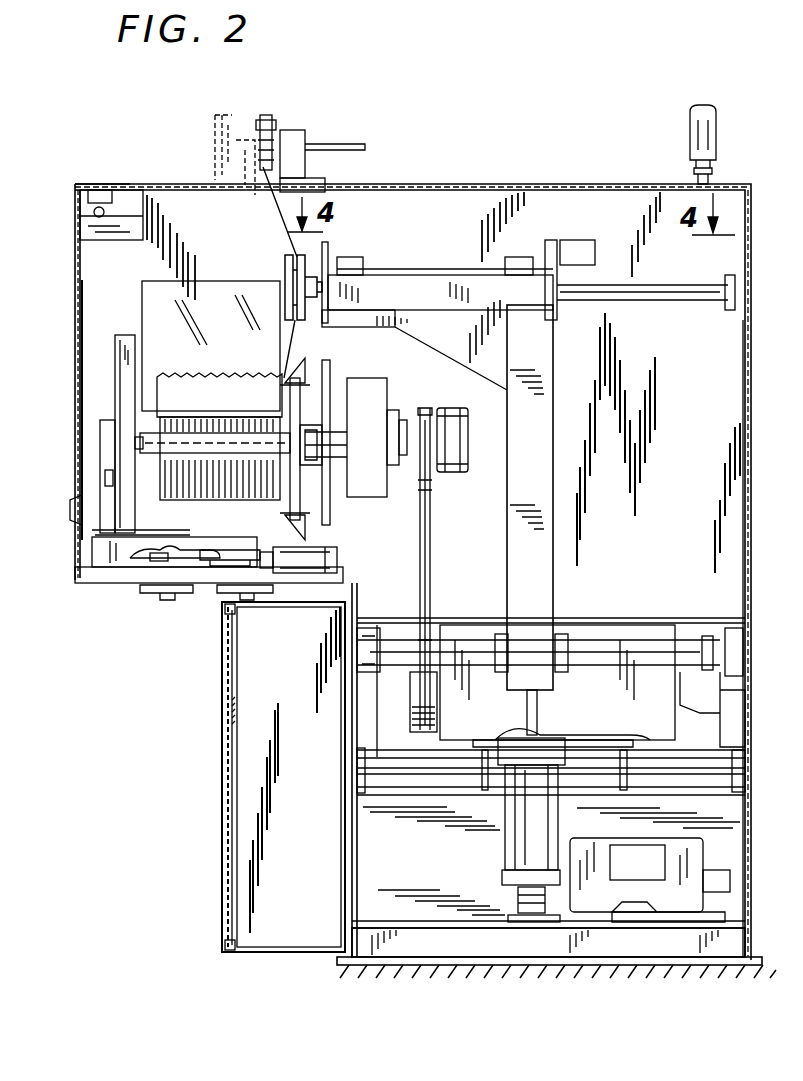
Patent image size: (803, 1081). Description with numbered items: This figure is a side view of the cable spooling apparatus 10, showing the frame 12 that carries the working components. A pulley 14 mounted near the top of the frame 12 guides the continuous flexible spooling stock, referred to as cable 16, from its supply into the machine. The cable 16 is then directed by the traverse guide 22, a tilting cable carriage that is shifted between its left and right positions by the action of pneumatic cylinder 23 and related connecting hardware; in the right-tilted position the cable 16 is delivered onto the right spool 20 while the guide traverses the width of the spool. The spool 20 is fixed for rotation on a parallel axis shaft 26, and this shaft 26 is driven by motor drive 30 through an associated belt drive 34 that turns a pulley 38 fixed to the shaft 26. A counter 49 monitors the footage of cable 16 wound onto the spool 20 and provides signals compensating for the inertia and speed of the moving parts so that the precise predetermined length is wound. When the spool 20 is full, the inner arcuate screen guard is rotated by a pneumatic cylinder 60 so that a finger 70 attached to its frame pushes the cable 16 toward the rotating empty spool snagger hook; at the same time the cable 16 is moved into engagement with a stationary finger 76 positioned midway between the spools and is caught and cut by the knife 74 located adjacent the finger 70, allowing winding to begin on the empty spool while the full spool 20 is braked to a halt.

The apparatus 10 is at (124, 182).
The frame 12 is at (489, 186).
The pulley 14 is at (262, 122).
The cable 16 is at (212, 500).
The right spool 20 is at (246, 380).
The traverse guide 22 is at (437, 272).
The pneumatic cylinder 23 is at (505, 850).
The parallel axis shaft 26 is at (212, 460).
The motor drive 30 is at (495, 724).
The belt drive 34 is at (432, 550).
The pulley 38 is at (430, 410).
The counter 49 is at (116, 235).
The pneumatic cylinder 60 is at (312, 557).
The finger 70 is at (103, 428).
The knife 74 is at (103, 478).
The stationary finger 76 is at (290, 476).